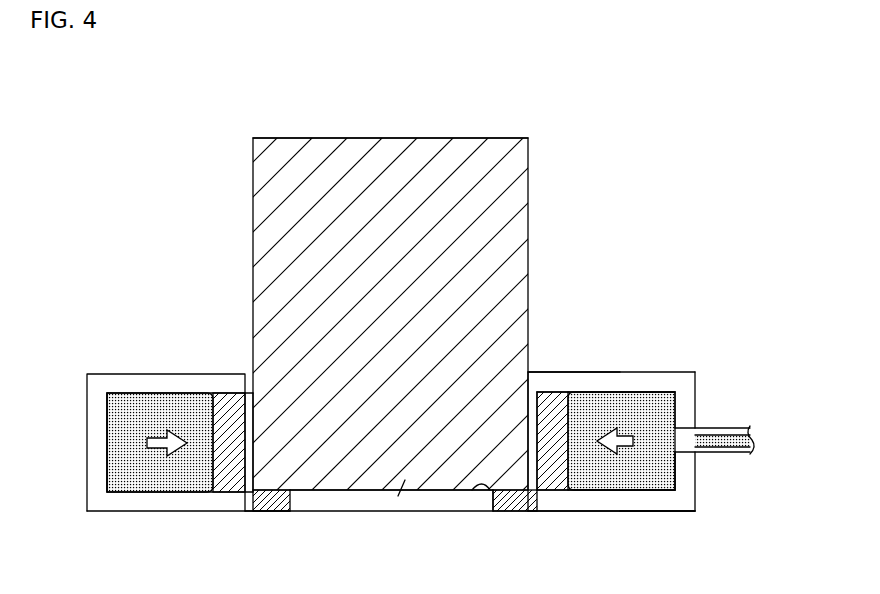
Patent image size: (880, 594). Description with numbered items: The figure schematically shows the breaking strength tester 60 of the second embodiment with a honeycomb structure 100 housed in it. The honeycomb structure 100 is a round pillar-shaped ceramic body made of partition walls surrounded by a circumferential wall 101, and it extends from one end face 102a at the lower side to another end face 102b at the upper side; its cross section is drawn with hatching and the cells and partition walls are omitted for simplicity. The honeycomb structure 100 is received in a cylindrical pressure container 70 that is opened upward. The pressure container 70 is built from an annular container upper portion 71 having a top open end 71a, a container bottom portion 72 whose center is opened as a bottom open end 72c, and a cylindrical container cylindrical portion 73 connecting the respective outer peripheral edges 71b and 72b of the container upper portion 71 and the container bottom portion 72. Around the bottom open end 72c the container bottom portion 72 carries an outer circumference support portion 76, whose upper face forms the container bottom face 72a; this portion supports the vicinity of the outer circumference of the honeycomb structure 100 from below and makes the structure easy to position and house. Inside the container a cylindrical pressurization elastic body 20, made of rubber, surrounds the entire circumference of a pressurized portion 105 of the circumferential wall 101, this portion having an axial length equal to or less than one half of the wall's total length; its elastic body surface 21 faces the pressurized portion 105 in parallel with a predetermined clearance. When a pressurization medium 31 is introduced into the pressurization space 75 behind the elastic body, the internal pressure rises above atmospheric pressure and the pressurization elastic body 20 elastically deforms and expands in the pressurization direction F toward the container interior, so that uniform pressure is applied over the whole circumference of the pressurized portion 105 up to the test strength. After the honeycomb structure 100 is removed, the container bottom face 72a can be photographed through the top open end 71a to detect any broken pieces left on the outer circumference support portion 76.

The honeycomb structure 100 is at (437, 318).
The circumferential wall 101 is at (253, 262).
The one end face 102a is at (362, 512).
The another end face 102b is at (390, 138).
The pressurized portion 105 is at (400, 496).
The breaking strength tester 60 is at (412, 385).
The pressure container 70 is at (599, 423).
The container upper portion 71 is at (655, 372).
The top open end 71a is at (532, 377).
The outer peripheral edge of container upper portion 71b is at (695, 388).
The container bottom portion 72 is at (655, 512).
The container bottom face 72a is at (483, 487).
The outer peripheral edge of container bottom portion 72b is at (695, 500).
The bottom open end 72c is at (300, 511).
The container cylindrical portion 73 is at (98, 443).
The pressurization space 75 is at (155, 397).
The outer circumference support portion 76 is at (262, 511).
The pressurization elastic body 20 is at (238, 480).
The elastic body surface 21 is at (253, 378).
The pressurization medium 31 is at (120, 395).
The pressurization direction F is at (165, 430).